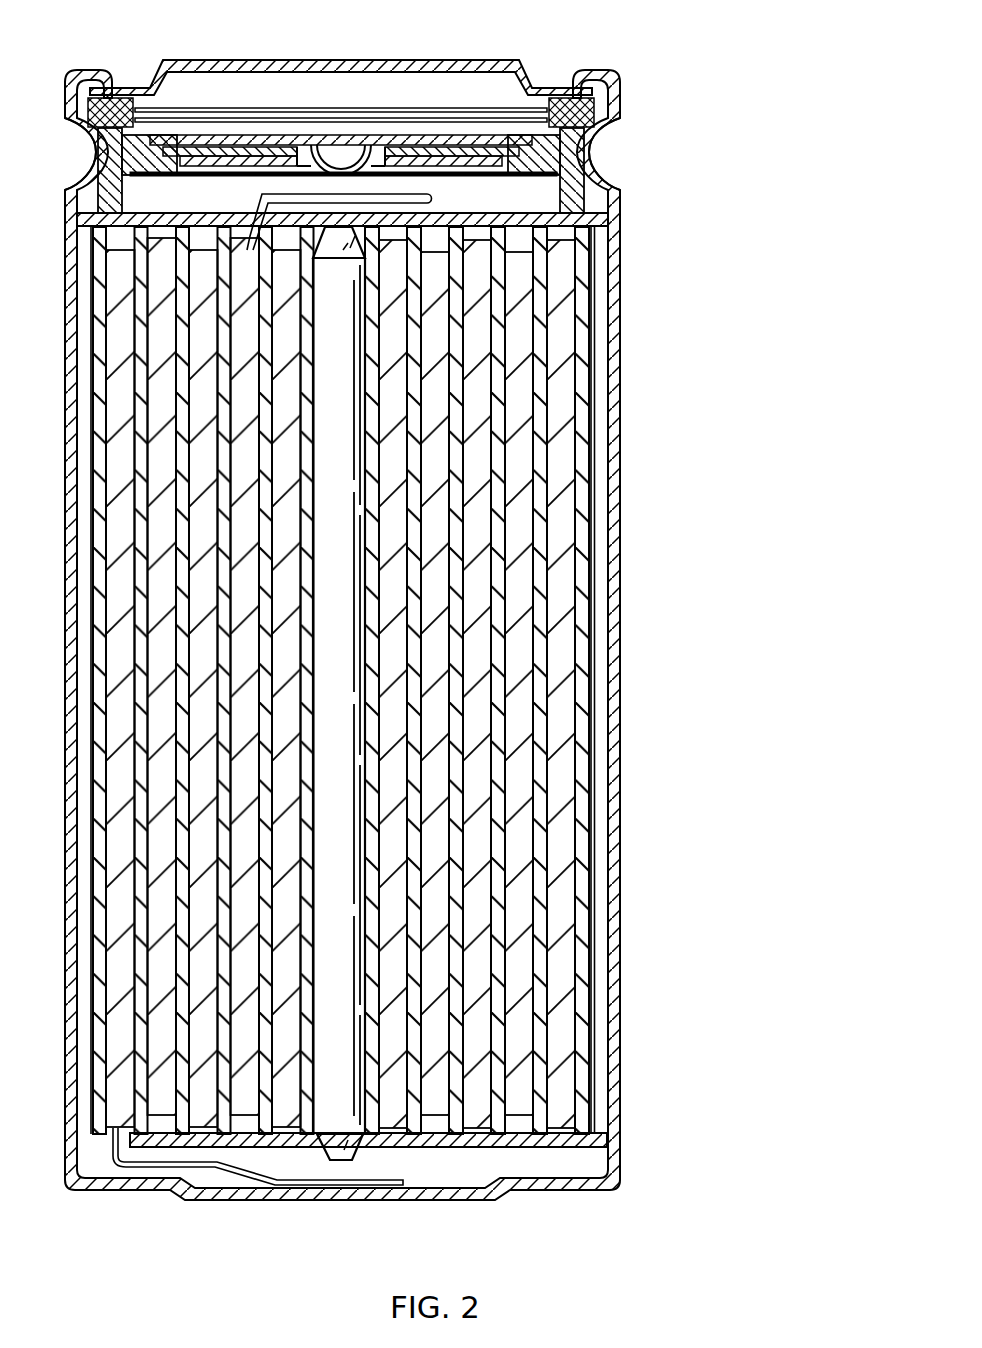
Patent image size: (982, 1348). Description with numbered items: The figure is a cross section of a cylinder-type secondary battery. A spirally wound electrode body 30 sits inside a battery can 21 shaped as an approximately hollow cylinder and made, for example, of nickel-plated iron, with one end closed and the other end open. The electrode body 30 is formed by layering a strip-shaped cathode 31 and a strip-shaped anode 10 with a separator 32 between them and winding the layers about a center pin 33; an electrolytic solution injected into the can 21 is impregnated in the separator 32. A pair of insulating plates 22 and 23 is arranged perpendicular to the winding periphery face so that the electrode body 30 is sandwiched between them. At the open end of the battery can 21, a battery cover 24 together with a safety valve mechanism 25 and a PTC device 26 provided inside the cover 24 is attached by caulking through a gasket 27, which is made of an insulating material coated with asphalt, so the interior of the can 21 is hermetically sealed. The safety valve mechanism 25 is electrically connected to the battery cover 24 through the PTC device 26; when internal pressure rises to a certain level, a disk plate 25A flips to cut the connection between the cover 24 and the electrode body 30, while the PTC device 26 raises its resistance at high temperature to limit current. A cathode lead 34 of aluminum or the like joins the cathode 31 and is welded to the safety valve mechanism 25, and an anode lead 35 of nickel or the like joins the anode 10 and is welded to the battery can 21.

The anode 10 is at (562, 572).
The battery can 21 is at (620, 287).
The insulating plate 22 is at (612, 222).
The insulating plate 23 is at (605, 1140).
The battery cover 24 is at (303, 58).
The safety valve mechanism 25 is at (474, 130).
The disk plate 25A is at (431, 137).
The PTC device 26 is at (600, 108).
The gasket 27 is at (612, 183).
The spirally wound electrode body 30 is at (387, 693).
The cathode 31 is at (527, 507).
The separator 32 is at (540, 647).
The center pin 33 is at (335, 692).
The cathode lead 34 is at (317, 172).
The anode lead 35 is at (225, 1170).